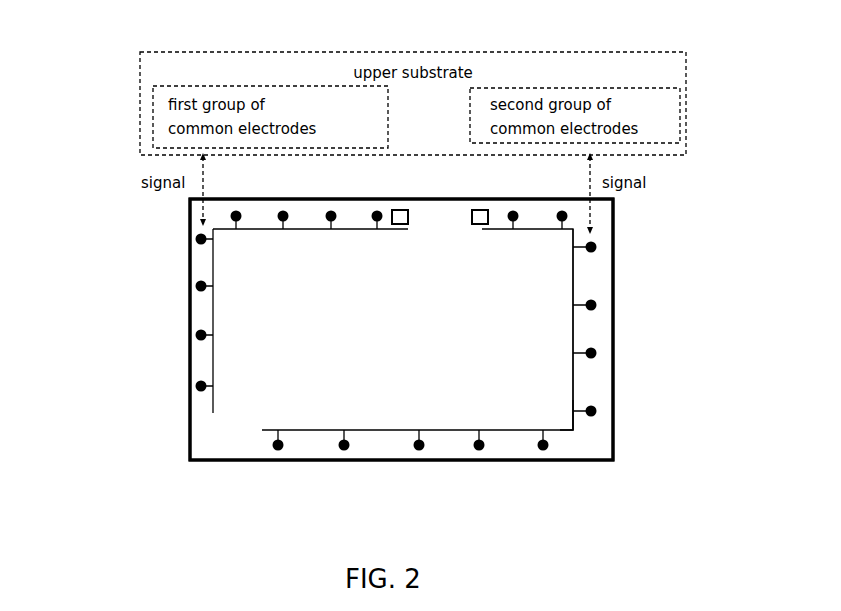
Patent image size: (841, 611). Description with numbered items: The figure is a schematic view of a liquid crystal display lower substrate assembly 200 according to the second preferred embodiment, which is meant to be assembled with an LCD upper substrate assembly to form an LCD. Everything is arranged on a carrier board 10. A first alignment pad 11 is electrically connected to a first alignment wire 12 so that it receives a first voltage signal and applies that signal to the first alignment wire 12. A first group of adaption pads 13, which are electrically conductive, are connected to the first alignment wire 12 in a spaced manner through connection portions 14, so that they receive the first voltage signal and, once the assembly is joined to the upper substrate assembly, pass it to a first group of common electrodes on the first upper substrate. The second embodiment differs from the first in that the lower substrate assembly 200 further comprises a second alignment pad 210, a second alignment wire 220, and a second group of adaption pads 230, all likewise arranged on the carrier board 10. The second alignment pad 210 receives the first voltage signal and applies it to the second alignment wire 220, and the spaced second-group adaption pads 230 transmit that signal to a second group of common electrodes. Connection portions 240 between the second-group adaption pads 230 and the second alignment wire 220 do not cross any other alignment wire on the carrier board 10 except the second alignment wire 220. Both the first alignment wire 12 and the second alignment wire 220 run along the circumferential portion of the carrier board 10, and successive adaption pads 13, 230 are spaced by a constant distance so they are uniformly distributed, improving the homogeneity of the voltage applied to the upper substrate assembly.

The carrier board 10 is at (445, 199).
The first alignment pad 11 is at (399, 210).
The first alignment wire 12 is at (307, 228).
The first group of adaption pads 13 is at (200, 236).
The connection portions 14 is at (213, 283).
The LCD lower substrate assembly 200 is at (179, 341).
The second alignment pad 210 is at (493, 200).
The second alignment wire 220 is at (576, 270).
The second group of adaption pads 230 is at (588, 350).
The connection portions 240 is at (580, 410).